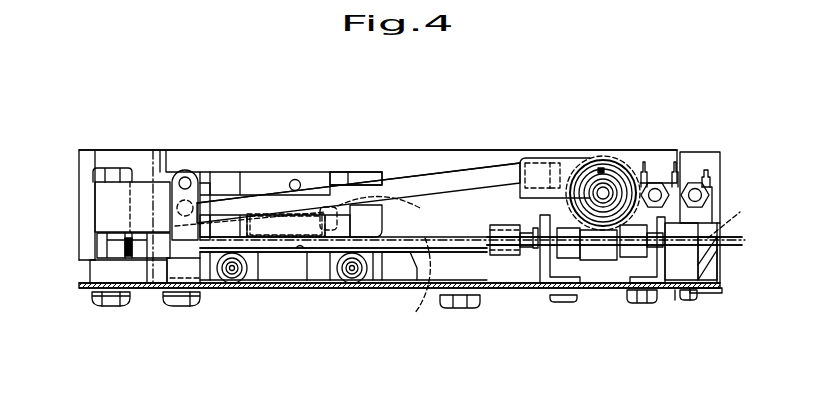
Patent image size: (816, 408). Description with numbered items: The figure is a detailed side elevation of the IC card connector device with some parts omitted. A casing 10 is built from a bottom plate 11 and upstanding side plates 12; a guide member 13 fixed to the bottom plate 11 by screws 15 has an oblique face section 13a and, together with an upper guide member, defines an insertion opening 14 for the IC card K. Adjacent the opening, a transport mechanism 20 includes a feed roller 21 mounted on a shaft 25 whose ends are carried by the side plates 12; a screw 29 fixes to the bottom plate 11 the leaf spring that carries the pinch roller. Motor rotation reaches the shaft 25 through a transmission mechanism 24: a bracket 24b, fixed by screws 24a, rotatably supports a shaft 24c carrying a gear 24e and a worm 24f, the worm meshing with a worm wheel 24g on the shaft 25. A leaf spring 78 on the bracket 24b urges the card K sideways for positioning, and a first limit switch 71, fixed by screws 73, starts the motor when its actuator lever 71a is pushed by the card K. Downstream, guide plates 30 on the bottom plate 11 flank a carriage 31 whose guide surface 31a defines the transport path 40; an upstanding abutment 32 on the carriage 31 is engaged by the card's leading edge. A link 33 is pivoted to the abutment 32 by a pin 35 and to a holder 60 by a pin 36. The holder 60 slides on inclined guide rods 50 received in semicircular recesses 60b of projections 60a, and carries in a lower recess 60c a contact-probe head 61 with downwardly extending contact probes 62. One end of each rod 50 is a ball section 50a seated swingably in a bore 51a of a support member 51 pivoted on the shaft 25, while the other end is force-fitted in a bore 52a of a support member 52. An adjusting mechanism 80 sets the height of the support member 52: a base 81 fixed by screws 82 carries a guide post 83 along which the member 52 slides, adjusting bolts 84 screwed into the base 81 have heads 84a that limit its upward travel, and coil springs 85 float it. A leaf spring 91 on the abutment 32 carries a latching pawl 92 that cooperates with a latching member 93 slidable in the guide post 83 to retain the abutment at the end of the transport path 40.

The casing 10 is at (715, 300).
The bottom plate 11 is at (612, 297).
The side plates 12 is at (503, 150).
The guide member 13 is at (717, 299).
The oblique face section 13a is at (705, 278).
The insertion opening 14 is at (710, 250).
The screws 15 is at (670, 300).
The transport mechanism 20 is at (647, 163).
The feed roller 21 is at (598, 158).
The transmission mechanism 24 is at (585, 290).
The screws 24a is at (627, 290).
The bracket 24b is at (537, 280).
The shaft 24c is at (533, 262).
The gear 24e is at (497, 262).
The worm 24f is at (607, 267).
The worm wheel 24g is at (608, 177).
The shaft 25 is at (640, 160).
The screw 29 is at (675, 303).
The guide plates 30 is at (498, 258).
The carriage 31 is at (306, 272).
The guide surface 31a is at (302, 252).
The abutment 32 is at (178, 180).
The link 33 is at (207, 193).
The pin 35 is at (192, 178).
The pin 36 is at (296, 179).
The transport path 40 is at (373, 237).
The guide rods 50 is at (463, 183).
The ball sections 50a is at (530, 157).
The support member 51 is at (568, 163).
The bores 51a is at (548, 165).
The support member 52 is at (103, 193).
The bores 52a is at (153, 150).
The holder 60 is at (380, 158).
The projections 60a is at (333, 177).
The recess 60b is at (415, 208).
The recess 60c is at (333, 213).
The contact-probe head 61 is at (275, 227).
The contact probes 62 is at (253, 280).
The first limit switch 71 is at (713, 227).
The actuator lever 71a is at (712, 227).
The screws 73 is at (693, 181).
The leaf spring 78 is at (700, 300).
The adjusting mechanism 80 is at (82, 265).
The base 81 is at (100, 268).
The screws 82 is at (113, 301).
The guide post 83 is at (203, 185).
The adjusting bolts 84 is at (97, 247).
The heads 84a is at (112, 170).
The coil springs 85 is at (97, 252).
The leaf spring 91 is at (152, 290).
The latching pawl 92 is at (108, 295).
The latching member 93 is at (127, 287).
The IC card K is at (578, 257).